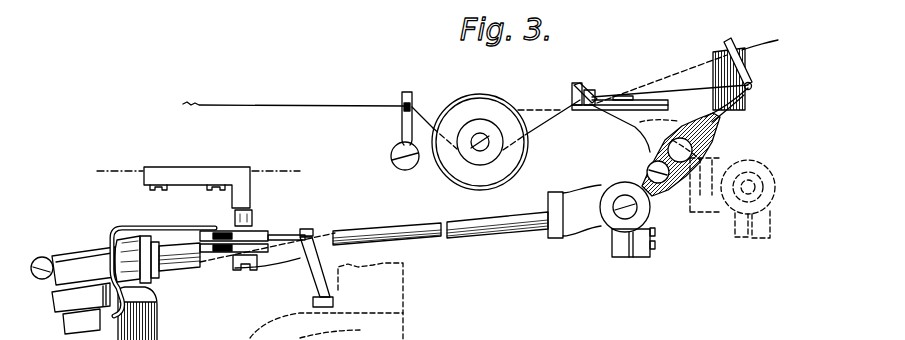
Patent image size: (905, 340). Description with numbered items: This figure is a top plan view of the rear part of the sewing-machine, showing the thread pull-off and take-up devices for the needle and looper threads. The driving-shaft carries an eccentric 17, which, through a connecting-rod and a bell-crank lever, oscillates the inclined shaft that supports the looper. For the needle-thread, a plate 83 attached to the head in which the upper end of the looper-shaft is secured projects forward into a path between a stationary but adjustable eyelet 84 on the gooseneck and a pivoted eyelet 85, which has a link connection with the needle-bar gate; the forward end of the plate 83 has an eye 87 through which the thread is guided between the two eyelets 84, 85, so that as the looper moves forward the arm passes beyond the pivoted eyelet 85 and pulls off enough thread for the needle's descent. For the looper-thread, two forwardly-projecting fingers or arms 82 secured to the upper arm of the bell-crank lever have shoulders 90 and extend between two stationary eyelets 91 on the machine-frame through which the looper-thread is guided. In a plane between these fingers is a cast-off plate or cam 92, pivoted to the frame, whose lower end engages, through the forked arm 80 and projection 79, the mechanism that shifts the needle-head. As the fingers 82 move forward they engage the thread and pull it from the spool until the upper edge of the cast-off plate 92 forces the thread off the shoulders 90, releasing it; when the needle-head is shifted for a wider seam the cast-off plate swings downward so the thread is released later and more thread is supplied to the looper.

The eccentric 17 is at (465, 78).
The projection 79 is at (322, 273).
The forked arm 80 is at (318, 235).
The fingers or arms 82 is at (230, 207).
The plate 83 is at (714, 139).
The stationary eyelet 84 is at (573, 84).
The pivoted eyelet 85 is at (733, 44).
The eye or opening 87 is at (750, 89).
The shoulders 90 is at (222, 235).
The stationary eyelets 91 is at (249, 223).
The cast-off plate or cam 92 is at (272, 236).